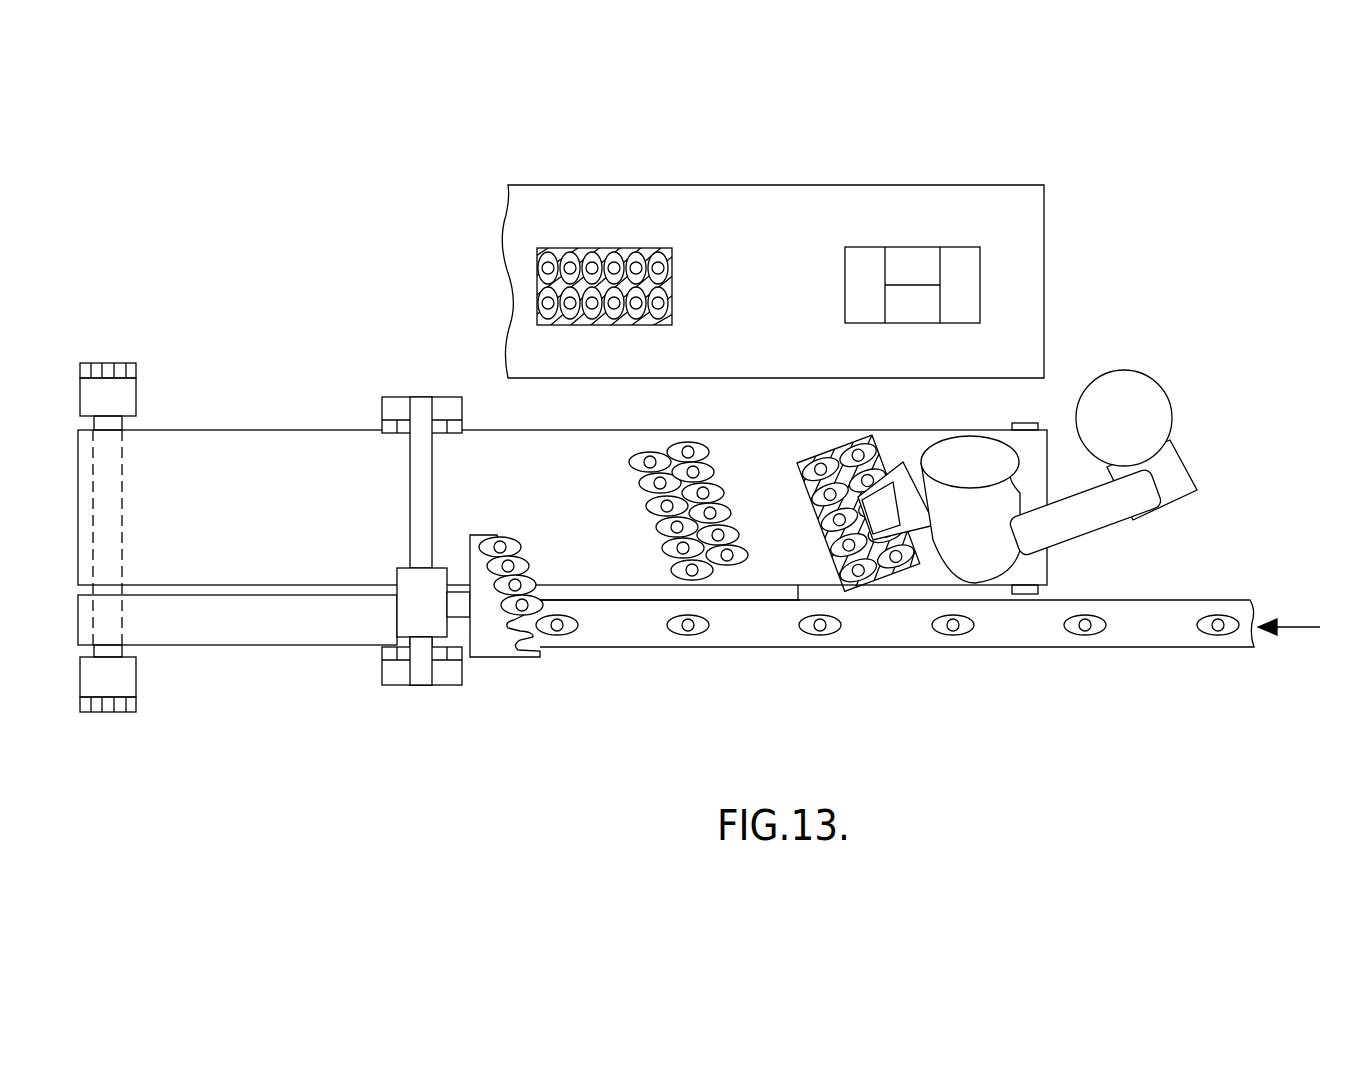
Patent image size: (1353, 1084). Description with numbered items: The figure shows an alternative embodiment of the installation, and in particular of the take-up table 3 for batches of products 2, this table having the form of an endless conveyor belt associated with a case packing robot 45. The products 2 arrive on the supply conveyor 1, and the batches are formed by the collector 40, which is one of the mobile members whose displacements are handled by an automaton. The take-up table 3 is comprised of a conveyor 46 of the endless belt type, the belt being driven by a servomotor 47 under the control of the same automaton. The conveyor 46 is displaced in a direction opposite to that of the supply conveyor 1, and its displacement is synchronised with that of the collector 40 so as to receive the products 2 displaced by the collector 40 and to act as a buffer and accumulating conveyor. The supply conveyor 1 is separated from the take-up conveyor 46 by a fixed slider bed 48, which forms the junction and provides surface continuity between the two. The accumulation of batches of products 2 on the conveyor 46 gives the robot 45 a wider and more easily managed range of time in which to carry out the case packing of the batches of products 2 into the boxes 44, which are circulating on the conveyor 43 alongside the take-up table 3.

The supply conveyor 1 is at (1020, 628).
The products 2 is at (683, 444).
The take-up table 3 is at (562, 523).
The collector 40 is at (492, 640).
The conveyor 43 is at (1012, 255).
The boxes 44 is at (627, 247).
The robot 45 is at (1133, 403).
The conveyor 46 is at (542, 479).
The servomotor 47 is at (123, 400).
The fixed slider bed 48 is at (625, 595).